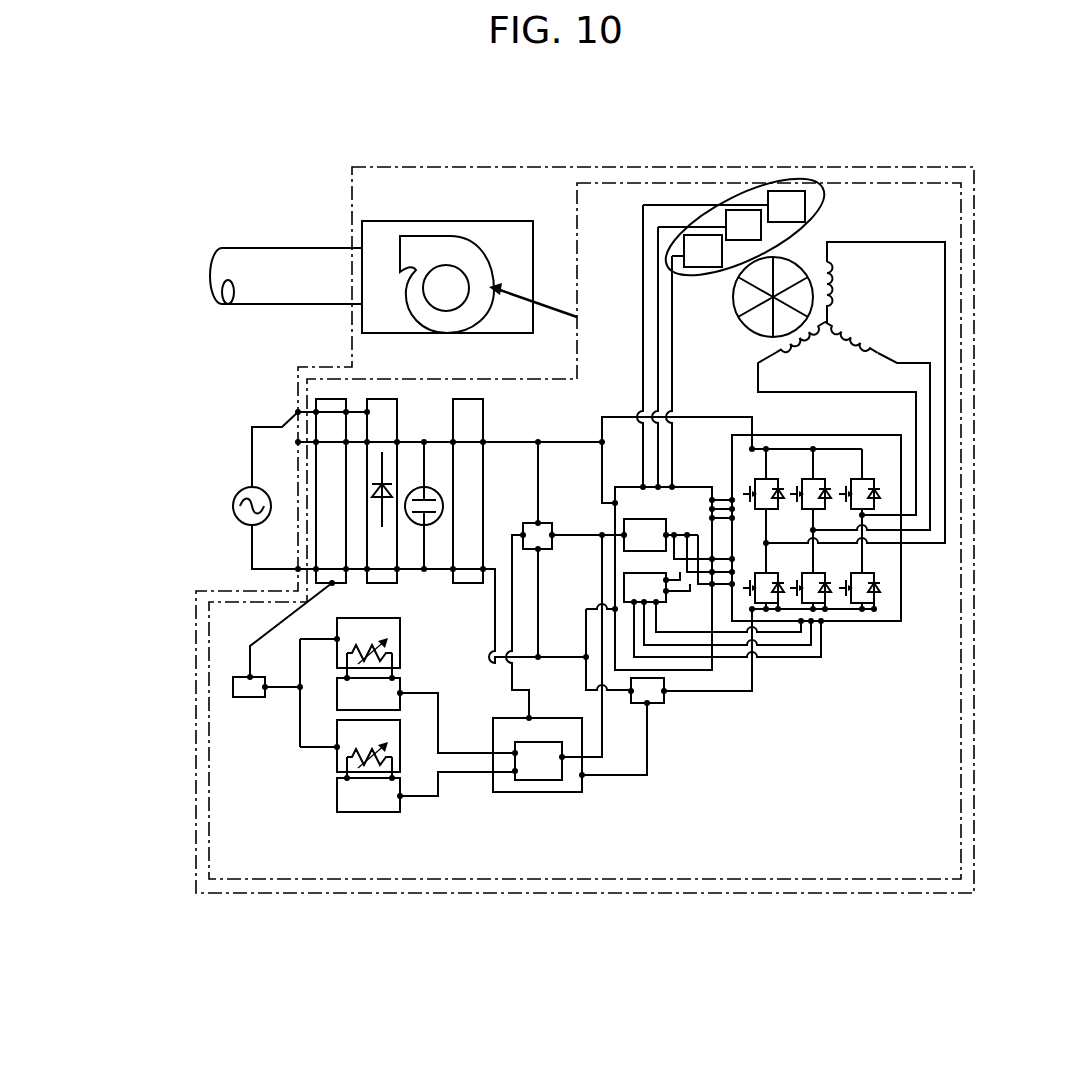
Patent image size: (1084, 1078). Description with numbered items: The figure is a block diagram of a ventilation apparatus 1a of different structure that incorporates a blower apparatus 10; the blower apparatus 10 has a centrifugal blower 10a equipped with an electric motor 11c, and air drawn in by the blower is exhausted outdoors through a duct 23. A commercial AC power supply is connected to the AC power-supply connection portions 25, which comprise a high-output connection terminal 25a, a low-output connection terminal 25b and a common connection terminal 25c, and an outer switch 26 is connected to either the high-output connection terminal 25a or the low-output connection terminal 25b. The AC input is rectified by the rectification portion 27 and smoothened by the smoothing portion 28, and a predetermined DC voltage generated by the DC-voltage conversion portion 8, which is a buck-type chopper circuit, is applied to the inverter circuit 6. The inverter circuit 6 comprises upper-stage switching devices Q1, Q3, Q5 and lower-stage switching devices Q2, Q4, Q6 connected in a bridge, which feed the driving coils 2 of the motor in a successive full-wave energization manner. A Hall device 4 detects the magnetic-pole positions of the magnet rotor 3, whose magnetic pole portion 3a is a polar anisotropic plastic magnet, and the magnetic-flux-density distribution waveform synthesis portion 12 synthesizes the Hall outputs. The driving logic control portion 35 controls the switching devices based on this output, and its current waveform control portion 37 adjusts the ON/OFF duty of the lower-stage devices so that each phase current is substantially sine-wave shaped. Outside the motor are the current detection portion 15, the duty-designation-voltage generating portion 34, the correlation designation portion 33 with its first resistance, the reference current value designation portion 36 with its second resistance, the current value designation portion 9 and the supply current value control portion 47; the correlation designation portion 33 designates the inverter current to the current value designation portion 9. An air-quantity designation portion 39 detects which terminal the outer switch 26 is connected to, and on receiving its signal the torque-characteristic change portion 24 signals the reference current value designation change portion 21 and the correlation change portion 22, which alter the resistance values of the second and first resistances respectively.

The ventilation apparatus 1a is at (385, 165).
The electric motor 11c is at (790, 880).
The duct 23 is at (302, 247).
The blower apparatus 10 is at (469, 251).
The centrifugal blower 10a is at (443, 235).
The outer switch 26 is at (296, 411).
The AC power-supply connection portions 25 is at (385, 491).
The high-output connection terminal 25a is at (296, 410).
The low-output connection terminal 25b is at (296, 442).
The common connection terminal 25c is at (296, 568).
The air-quantity designation portion 39 is at (327, 398).
The rectification portion 27 is at (383, 398).
The smoothing portion 28 is at (419, 483).
The DC-voltage conversion portion 8 is at (483, 410).
The duty-designation-voltage generating portion 34 is at (523, 518).
The driving logic control portion 35 is at (691, 481).
The magnetic-flux-density distribution waveform synthesis portion 12 is at (643, 518).
The current waveform control portion 37 is at (625, 582).
The inverter circuit 6 is at (782, 563).
The upper-stage switching device Q1 is at (772, 496).
The lower-stage switching device Q2 is at (772, 576).
The upper-stage switching device Q3 is at (819, 489).
The lower-stage switching device Q4 is at (819, 569).
The upper-stage switching device Q5 is at (867, 482).
The lower-stage switching device Q6 is at (867, 562).
The driving coil 2 is at (808, 345).
The magnet rotor 3 is at (754, 330).
The magnetic pole portion 3a is at (758, 330).
The Hall device 4 is at (703, 273).
The torque-characteristic change portion 24 is at (250, 699).
The correlation change portion 22 is at (403, 625).
The correlation designation portion 33 is at (403, 680).
The reference current value designation change portion 21 is at (335, 760).
The reference current value designation portion 36 is at (385, 813).
The supply current value control portion 47 is at (570, 780).
The current value designation portion 9 is at (549, 781).
The current detection portion 15 is at (660, 705).